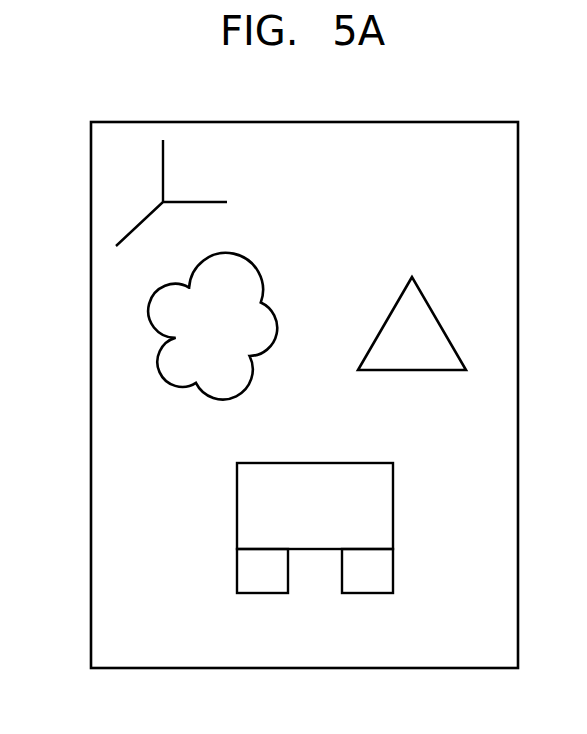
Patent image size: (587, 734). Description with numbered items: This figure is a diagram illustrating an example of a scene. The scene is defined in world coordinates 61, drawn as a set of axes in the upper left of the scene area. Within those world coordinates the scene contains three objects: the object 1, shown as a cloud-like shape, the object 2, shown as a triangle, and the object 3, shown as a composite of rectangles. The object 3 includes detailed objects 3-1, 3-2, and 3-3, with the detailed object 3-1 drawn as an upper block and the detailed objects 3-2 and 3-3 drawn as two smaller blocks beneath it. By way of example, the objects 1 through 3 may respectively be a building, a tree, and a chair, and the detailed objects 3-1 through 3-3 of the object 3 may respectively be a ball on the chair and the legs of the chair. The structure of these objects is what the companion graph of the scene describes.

The world coordinates 61 is at (150, 171).
The object 1 is at (212, 326).
The object 2 is at (412, 323).
The object 3 is at (263, 558).
The detailed object 3-1 is at (315, 506).
The detailed object 3-2 is at (267, 593).
The detailed object 3-3 is at (373, 593).